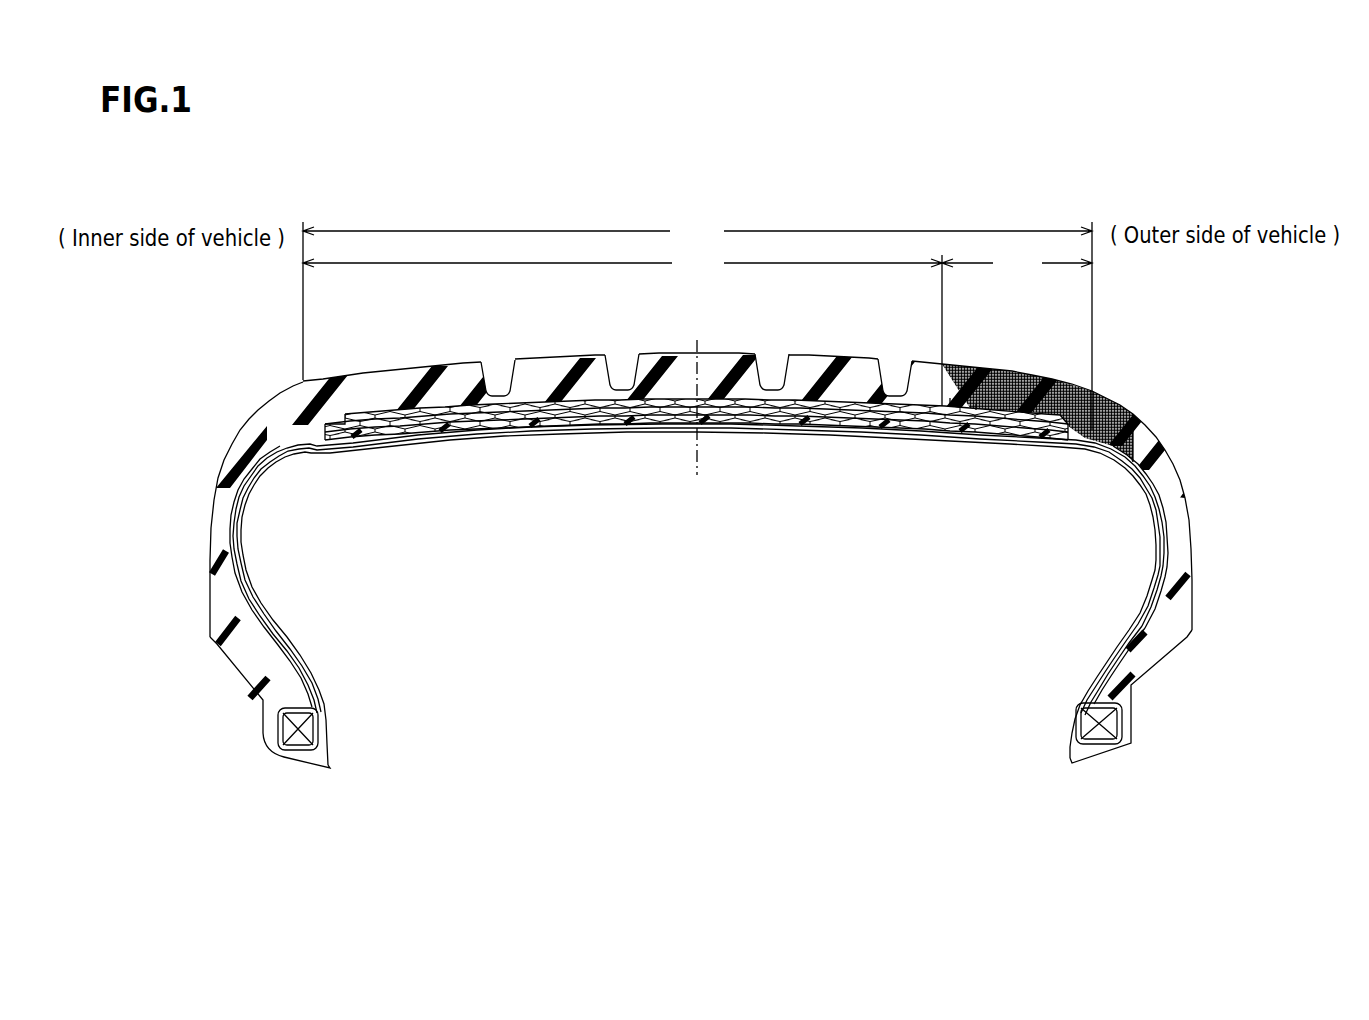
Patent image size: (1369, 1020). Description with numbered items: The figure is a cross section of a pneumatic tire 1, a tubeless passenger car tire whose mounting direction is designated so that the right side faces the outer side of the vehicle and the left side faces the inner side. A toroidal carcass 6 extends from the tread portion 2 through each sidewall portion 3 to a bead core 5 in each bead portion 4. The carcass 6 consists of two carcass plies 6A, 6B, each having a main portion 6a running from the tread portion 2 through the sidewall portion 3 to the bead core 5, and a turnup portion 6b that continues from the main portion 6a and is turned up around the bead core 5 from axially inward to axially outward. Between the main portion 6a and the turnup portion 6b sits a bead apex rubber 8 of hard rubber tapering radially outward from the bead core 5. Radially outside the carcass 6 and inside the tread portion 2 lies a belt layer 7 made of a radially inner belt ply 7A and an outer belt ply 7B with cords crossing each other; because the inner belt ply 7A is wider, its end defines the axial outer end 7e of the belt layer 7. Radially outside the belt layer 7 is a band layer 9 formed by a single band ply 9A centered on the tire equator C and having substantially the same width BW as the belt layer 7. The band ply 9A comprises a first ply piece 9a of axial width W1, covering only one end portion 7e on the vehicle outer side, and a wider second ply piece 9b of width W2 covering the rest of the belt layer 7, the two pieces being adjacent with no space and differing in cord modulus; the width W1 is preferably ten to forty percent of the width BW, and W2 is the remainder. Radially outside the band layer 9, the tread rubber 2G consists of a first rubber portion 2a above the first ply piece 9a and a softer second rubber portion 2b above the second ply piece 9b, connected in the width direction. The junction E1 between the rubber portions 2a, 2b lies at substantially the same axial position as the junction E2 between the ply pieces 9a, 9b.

The pneumatic tire 1 is at (1181, 389).
The tread portion 2 is at (834, 337).
The tread rubber 2G is at (585, 340).
The first rubber portion 2a is at (1030, 380).
The second rubber portion 2b is at (863, 372).
The sidewall portion 3 is at (189, 517).
The bead portion 4 is at (238, 714).
The bead core 5 is at (310, 728).
The carcass 6 is at (698, 568).
The carcass ply 6A is at (1098, 452).
The carcass ply 6B is at (1153, 480).
The main portion 6a is at (1117, 650).
The turnup portion 6b is at (1147, 653).
The belt layer 7 is at (695, 447).
The inner belt ply 7A is at (745, 411).
The outer belt ply 7B is at (785, 408).
The axial outer end of the belt layer 7e is at (305, 437).
The bead apex rubber 8 is at (283, 670).
The band layer 9 is at (696, 478).
The band ply 9A is at (696, 478).
The first ply piece 9a is at (957, 412).
The second ply piece 9b is at (908, 416).
The junction between the first and second rubber portions E1 is at (950, 400).
The junction between the first and second ply pieces E2 is at (976, 408).
The tire equator C is at (695, 396).
The axial width of the belt layer BW is at (697, 324).
The axial width of the first ply piece W1 is at (1017, 263).
The width of the second ply piece W2 is at (622, 328).